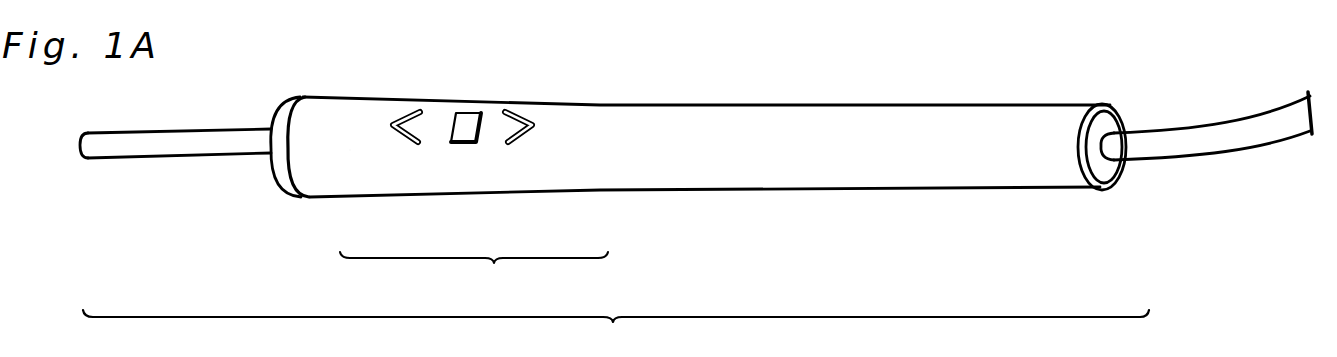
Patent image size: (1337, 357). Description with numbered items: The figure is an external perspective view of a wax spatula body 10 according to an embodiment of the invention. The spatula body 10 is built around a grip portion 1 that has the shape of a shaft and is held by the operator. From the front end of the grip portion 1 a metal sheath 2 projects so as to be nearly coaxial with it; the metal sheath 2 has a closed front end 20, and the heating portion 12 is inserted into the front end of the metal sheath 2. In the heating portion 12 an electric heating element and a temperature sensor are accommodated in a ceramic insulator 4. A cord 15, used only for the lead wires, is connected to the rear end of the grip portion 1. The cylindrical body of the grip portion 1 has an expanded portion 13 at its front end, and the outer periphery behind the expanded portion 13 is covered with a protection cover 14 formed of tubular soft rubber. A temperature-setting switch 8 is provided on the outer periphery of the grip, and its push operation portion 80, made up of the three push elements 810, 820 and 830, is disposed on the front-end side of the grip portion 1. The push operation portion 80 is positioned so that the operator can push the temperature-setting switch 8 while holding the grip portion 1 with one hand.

The grip portion 1 is at (902, 175).
The metal sheath 2 is at (218, 133).
The ceramic insulator 4 is at (135, 138).
The temperature-setting switch 8 is at (471, 349).
The spatula body 10 is at (616, 333).
The heating portion 12 is at (170, 160).
The expanded portion 13 is at (300, 97).
The protection cover 14 is at (753, 180).
The cord 15 is at (1208, 143).
The closed front end 20 is at (86, 158).
The push operation portion 80 is at (474, 275).
The push button 810 is at (407, 145).
The push button 820 is at (464, 147).
The push button 830 is at (521, 147).